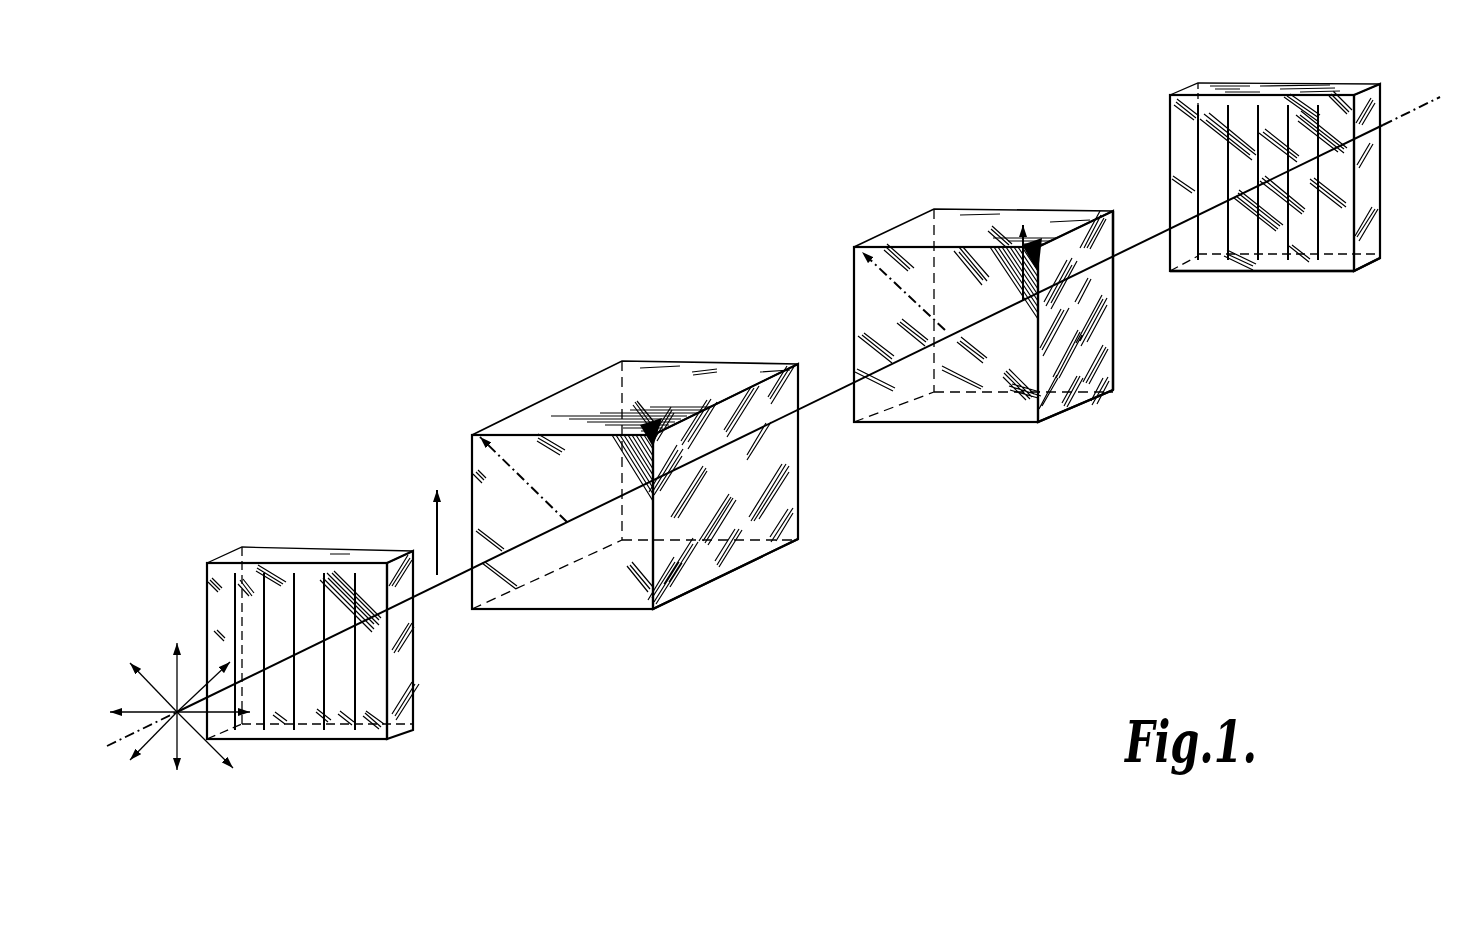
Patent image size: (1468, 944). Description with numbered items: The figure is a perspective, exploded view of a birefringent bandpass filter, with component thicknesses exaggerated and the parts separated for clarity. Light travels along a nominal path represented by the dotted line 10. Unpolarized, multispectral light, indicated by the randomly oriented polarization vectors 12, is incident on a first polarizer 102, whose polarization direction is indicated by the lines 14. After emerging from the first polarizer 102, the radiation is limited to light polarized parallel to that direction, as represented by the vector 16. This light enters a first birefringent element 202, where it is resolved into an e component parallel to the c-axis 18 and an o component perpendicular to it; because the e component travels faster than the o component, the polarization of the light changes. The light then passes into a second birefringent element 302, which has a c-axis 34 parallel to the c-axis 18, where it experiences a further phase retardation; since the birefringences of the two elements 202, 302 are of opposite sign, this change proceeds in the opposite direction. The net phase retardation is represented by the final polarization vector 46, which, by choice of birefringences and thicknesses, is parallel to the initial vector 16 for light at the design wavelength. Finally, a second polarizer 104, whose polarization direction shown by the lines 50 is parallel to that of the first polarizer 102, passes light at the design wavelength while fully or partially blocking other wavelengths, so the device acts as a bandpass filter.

The dotted line 10 is at (820, 395).
The randomly oriented polarization vectors 12 is at (202, 772).
The lines 14 is at (363, 690).
The first polarizer 102 is at (281, 553).
The vector 16 is at (438, 528).
The c-axis 18 is at (520, 465).
The first birefringent element 202 is at (720, 578).
The c-axis 34 is at (910, 298).
The final polarization vector 46 is at (1015, 280).
The second birefringent element 302 is at (1114, 362).
The lines 50 is at (1190, 133).
The second polarizer 104 is at (1278, 272).